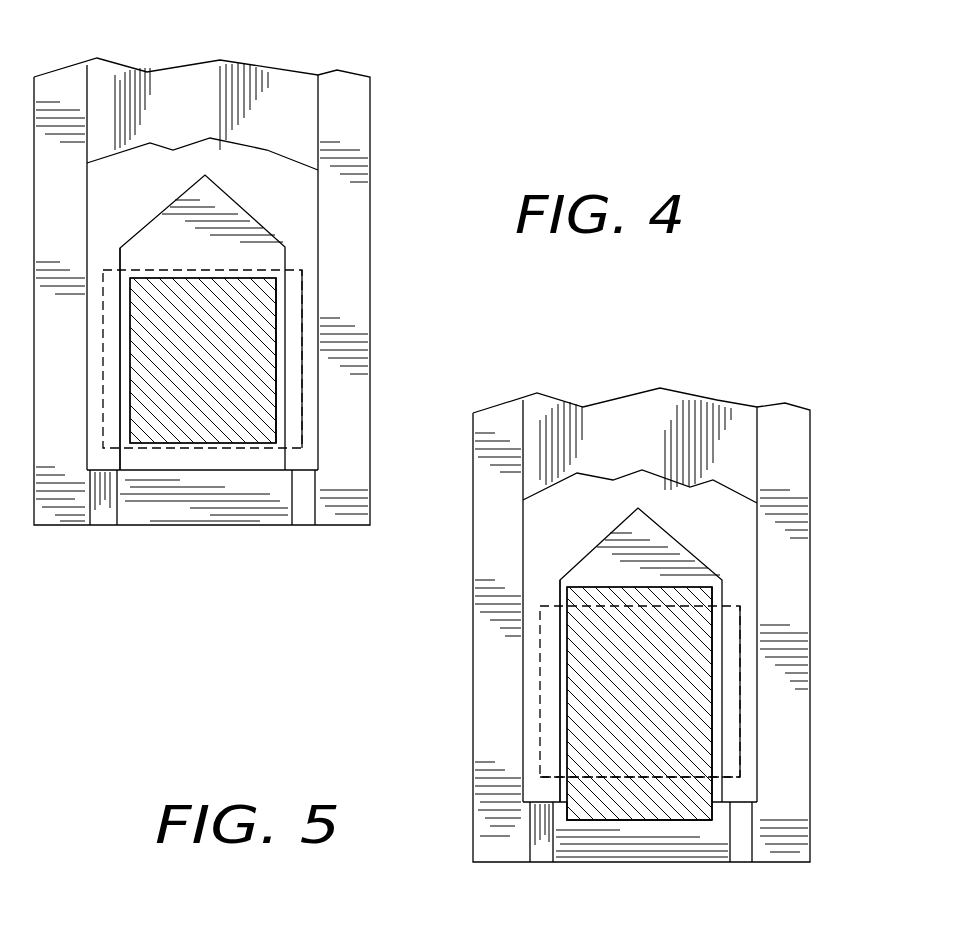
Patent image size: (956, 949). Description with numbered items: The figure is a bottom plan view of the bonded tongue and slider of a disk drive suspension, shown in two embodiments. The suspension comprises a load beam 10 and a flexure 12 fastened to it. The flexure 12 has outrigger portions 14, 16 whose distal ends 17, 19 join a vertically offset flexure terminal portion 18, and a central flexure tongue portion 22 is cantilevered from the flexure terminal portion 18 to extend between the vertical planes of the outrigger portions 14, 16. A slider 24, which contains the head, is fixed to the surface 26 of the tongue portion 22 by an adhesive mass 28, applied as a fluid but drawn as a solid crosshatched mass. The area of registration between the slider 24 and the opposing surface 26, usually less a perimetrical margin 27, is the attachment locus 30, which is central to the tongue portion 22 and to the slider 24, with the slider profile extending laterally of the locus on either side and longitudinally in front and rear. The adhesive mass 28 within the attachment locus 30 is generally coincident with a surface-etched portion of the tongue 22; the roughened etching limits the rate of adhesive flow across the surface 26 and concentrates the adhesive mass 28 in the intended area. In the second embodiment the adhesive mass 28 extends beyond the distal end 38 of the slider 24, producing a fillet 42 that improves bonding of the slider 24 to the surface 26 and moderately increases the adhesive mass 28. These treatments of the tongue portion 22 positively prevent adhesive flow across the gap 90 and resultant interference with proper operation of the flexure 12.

In FIG. 4, the load beam 10 is at (118, 78).
In FIG. 5, the load beam 10 is at (548, 417).
In FIG. 4, the flexure 12 is at (385, 113).
In FIG. 5, the flexure 12 is at (770, 395).
In FIG. 4, the outrigger portion 14 is at (52, 92).
In FIG. 5, the outrigger portion 14 is at (497, 460).
In FIG. 4, the outrigger portion 16 is at (337, 85).
In FIG. 5, the outrigger portion 16 is at (790, 440).
In FIG. 4, the distal end 17 is at (68, 527).
In FIG. 5, the distal end 17 is at (503, 865).
In FIG. 4, the flexure terminal portion 18 is at (170, 508).
In FIG. 5, the flexure terminal portion 18 is at (595, 865).
In FIG. 4, the distal end 19 is at (335, 522).
In FIG. 5, the distal end 19 is at (783, 853).
In FIG. 4, the flexure tongue portion 22 is at (218, 217).
In FIG. 5, the flexure tongue portion 22 is at (657, 543).
In FIG. 4, the slider 24 is at (303, 407).
In FIG. 5, the slider 24 is at (543, 700).
In FIG. 4, the tongue portion surface 26 is at (288, 437).
In FIG. 5, the tongue portion surface 26 is at (715, 613).
In FIG. 4, the perimetrical margin 27 is at (120, 277).
In FIG. 5, the perimetrical margin 27 is at (560, 590).
In FIG. 4, the adhesive mass 28 is at (267, 383).
In FIG. 5, the adhesive mass 28 is at (595, 659).
In FIG. 4, the attachment locus 30 is at (260, 347).
In FIG. 5, the attachment locus 30 is at (683, 702).
In FIG. 5, the distal end of slider 38 is at (740, 768).
In FIG. 5, the fillet 42 is at (590, 797).
In FIG. 4, the gap 90 is at (308, 277).
In FIG. 5, the gap 90 is at (748, 650).